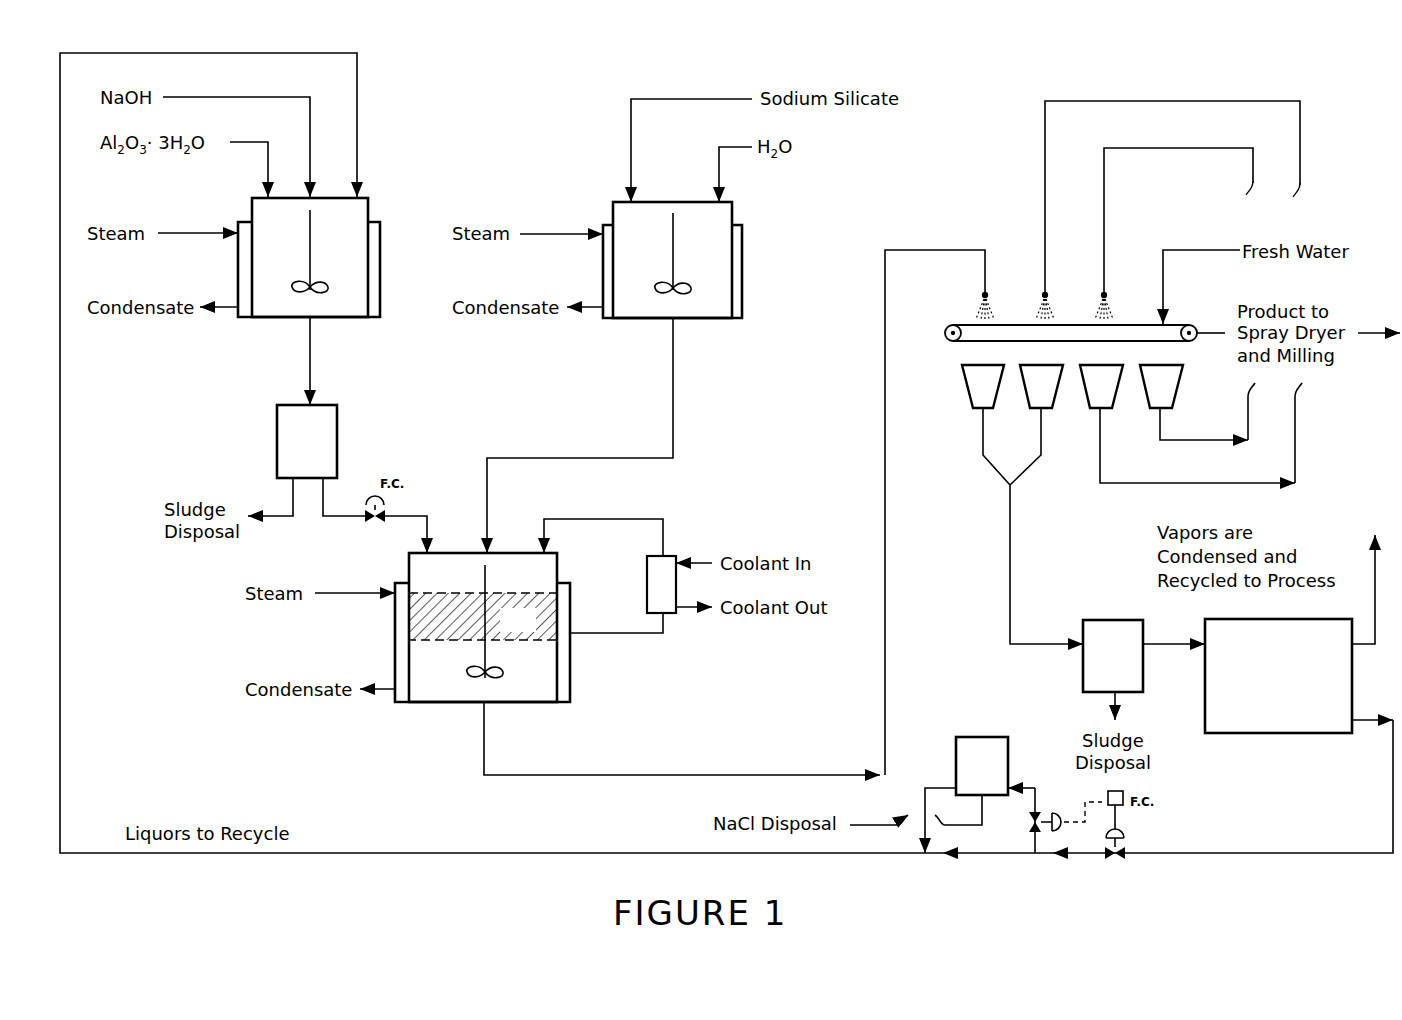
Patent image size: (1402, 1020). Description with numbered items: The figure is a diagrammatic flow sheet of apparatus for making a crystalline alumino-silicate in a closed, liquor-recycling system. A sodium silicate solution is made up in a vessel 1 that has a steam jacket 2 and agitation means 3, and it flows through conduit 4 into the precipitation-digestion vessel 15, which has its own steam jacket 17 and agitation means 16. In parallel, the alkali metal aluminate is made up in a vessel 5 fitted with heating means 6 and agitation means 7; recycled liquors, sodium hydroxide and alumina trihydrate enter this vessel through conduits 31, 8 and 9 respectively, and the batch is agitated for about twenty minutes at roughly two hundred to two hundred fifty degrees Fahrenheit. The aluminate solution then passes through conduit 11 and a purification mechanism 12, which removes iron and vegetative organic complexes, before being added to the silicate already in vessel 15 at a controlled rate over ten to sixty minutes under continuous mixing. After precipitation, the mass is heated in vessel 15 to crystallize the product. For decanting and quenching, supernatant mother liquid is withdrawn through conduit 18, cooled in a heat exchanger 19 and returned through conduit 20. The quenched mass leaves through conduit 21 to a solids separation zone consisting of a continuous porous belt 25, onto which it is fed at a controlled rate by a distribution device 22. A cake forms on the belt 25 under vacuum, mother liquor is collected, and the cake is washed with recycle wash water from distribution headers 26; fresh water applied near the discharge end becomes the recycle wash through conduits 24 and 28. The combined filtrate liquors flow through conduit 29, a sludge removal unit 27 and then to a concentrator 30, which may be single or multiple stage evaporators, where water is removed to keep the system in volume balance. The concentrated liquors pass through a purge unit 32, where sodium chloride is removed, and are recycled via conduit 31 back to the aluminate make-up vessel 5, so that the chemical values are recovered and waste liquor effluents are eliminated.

The silicate make-up vessel 1 is at (637, 321).
The steam jacket 2 is at (742, 272).
The agitation means 3 is at (673, 267).
The conduit 4 is at (580, 435).
The aluminate make-up vessel 5 is at (267, 321).
The heating means 6 is at (380, 268).
The agitation means 7 is at (310, 264).
The conduit 8 is at (236, 138).
The conduit 9 is at (249, 160).
The conduit 11 is at (320, 361).
The purification mechanism 12 is at (277, 445).
The precipitation-digestion vessel 15 is at (440, 706).
The agitation means 16 is at (485, 674).
The steam jacket 17 is at (395, 660).
The conduit 18 is at (616, 623).
The heat exchanger 19 is at (679, 553).
The conduit 20 is at (603, 528).
The conduit 21 is at (682, 738).
The distribution device 22 is at (935, 503).
The conduit 24 is at (1173, 283).
The continuous porous belt 25 is at (948, 344).
The distribution headers 26 is at (1044, 305).
The sludge removal unit 27 is at (1105, 618).
The conduit 28 is at (1179, 285).
The conduit 29 is at (1033, 526).
The concentrator 30 is at (1313, 738).
The conduit 31 is at (726, 446).
The purge unit 32 is at (968, 735).